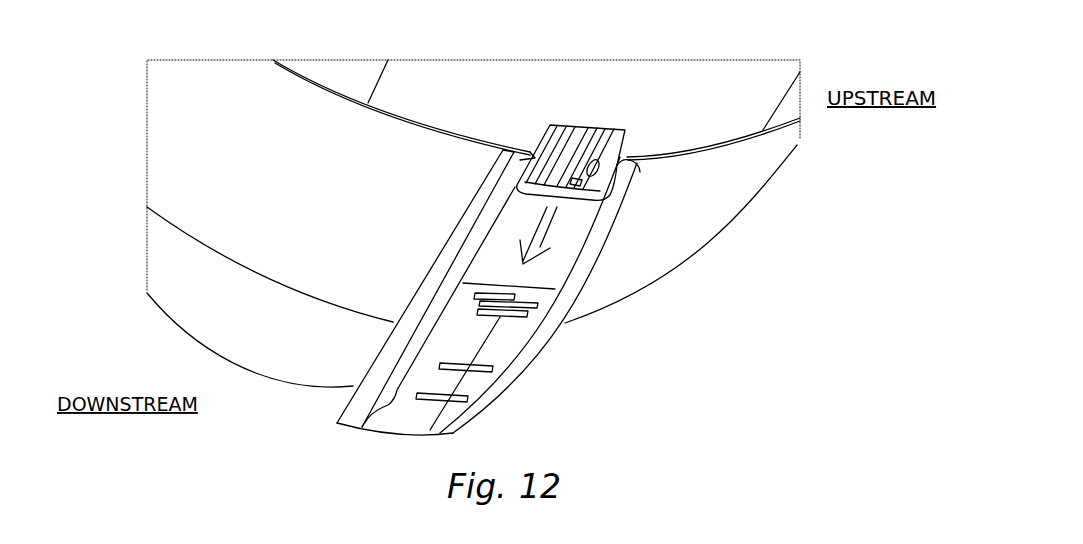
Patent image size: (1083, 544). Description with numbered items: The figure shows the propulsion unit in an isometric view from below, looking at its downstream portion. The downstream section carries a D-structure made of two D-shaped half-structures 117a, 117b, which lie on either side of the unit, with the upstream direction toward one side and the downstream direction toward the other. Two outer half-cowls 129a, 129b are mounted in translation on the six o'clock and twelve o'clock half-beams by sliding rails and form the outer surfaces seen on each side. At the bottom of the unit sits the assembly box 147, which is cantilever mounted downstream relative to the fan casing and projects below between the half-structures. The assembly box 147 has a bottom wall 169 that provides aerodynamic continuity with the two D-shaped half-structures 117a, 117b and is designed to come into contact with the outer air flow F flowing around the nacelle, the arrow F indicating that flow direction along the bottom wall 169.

The D-shaped half-structure 117a is at (683, 237).
The D-shaped half-structure 117b is at (195, 132).
The outer half-cowl 129a is at (710, 215).
The outer half-cowl 129b is at (213, 173).
The assembly box 147 is at (580, 225).
The bottom wall 169 is at (551, 263).